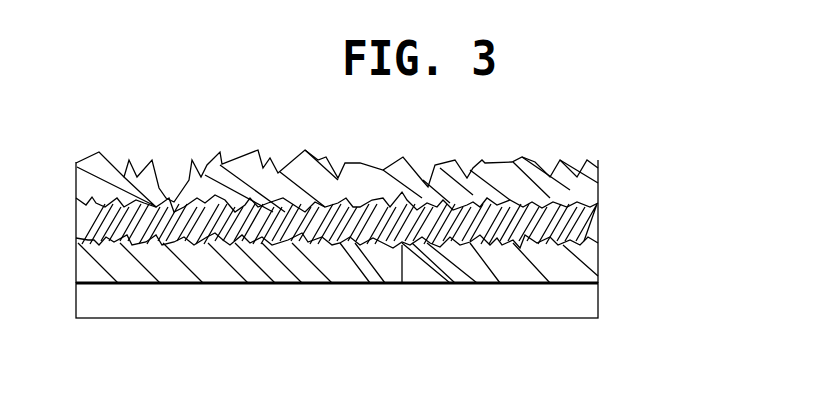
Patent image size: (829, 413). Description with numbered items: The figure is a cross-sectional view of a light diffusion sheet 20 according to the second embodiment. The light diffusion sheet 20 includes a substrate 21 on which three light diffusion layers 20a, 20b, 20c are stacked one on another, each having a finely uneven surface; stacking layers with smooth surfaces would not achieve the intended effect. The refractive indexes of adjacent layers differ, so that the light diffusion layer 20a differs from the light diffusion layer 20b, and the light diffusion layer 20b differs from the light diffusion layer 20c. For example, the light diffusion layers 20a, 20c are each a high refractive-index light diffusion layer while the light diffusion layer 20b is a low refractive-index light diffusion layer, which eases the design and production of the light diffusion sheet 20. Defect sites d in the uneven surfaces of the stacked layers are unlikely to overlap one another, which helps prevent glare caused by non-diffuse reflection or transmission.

The light diffusion sheet 20 is at (432, 199).
The light diffusion layer 20a is at (570, 270).
The light diffusion layer 20b is at (568, 217).
The light diffusion layer 20c is at (390, 165).
The substrate 21 is at (560, 302).
The defect site d is at (172, 187).